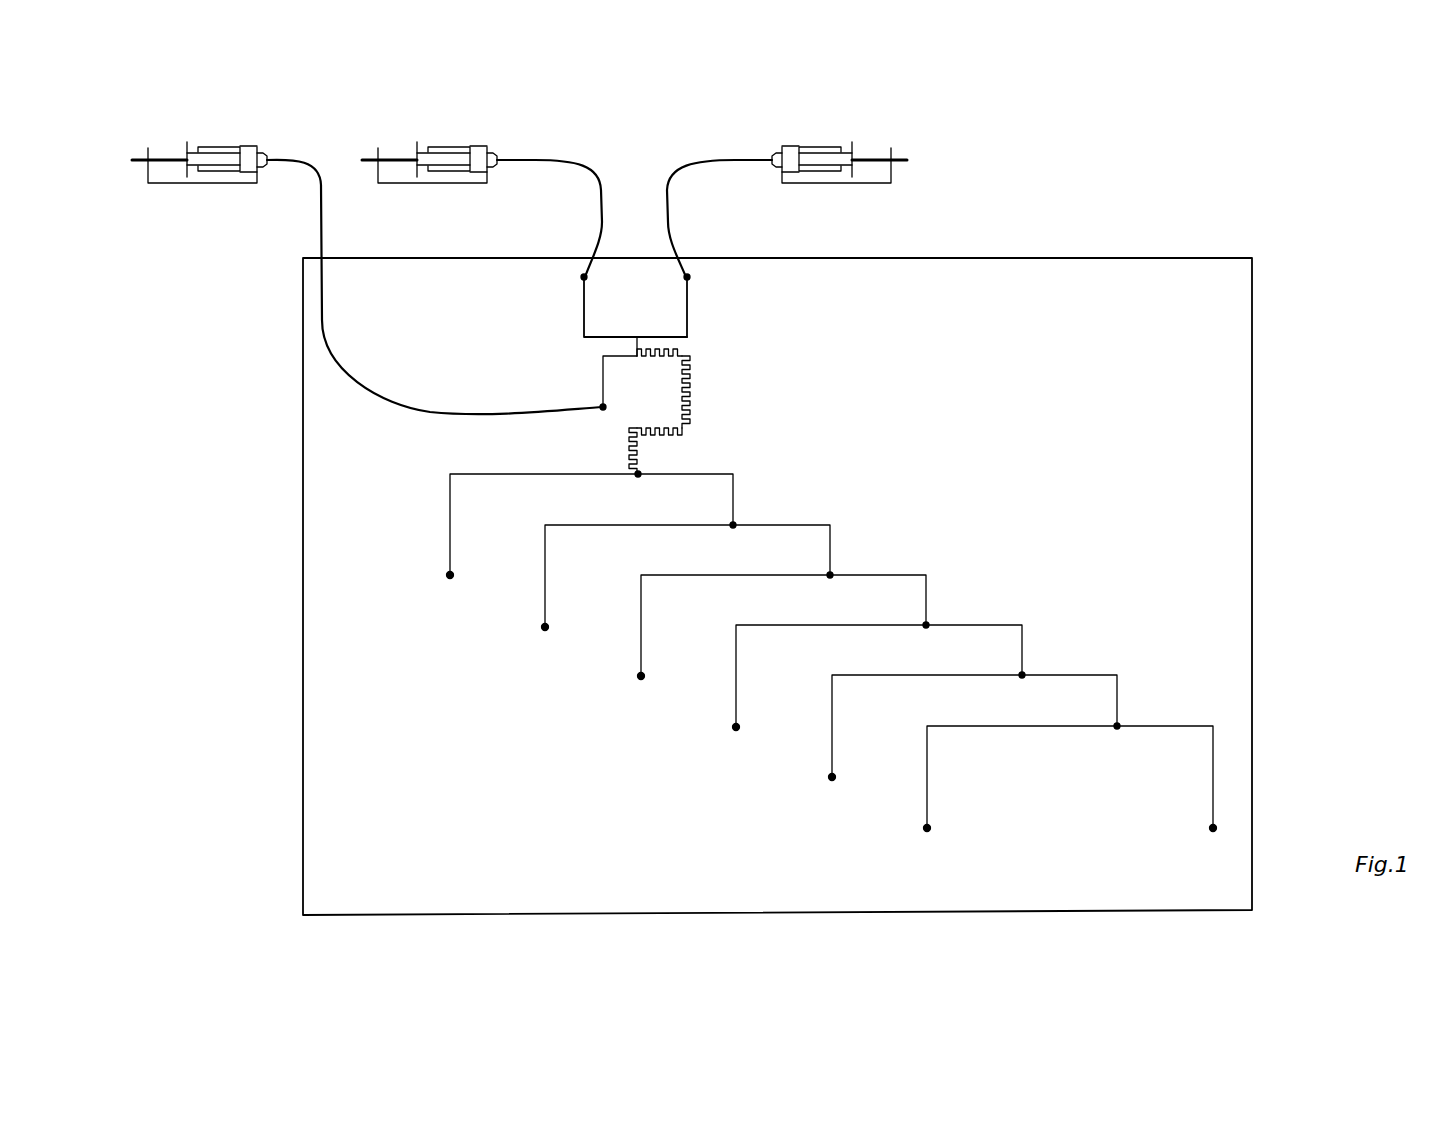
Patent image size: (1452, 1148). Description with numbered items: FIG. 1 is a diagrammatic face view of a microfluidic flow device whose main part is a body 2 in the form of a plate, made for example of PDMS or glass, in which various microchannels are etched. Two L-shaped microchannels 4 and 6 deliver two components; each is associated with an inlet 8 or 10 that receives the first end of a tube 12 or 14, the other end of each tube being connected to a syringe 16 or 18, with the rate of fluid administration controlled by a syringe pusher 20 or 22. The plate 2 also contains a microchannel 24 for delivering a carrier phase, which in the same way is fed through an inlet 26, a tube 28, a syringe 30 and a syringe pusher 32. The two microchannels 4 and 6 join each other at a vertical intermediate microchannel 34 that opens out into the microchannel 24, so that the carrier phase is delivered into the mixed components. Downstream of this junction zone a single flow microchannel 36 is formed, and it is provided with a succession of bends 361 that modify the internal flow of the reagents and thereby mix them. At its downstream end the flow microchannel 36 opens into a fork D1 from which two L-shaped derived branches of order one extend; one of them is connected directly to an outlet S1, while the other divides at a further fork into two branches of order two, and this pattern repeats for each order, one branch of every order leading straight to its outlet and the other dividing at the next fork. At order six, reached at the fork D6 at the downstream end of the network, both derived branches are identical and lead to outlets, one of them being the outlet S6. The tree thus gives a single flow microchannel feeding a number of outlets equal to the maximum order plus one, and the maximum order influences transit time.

The body 2 is at (1190, 230).
The L-shaped microchannel 4 is at (575, 310).
The L-shaped microchannel 6 is at (705, 322).
The inlet 8 is at (584, 277).
The inlet 10 is at (687, 277).
The tube 12 is at (568, 165).
The tube 14 is at (697, 158).
The syringe 16 is at (448, 160).
The syringe 18 is at (844, 149).
The syringe pusher 20 is at (397, 183).
The syringe pusher 22 is at (838, 183).
The microchannel 24 is at (577, 375).
The inlet 26 is at (603, 410).
The tube 28 is at (430, 412).
The syringe 30 is at (216, 174).
The syringe pusher 32 is at (195, 185).
The intermediate microchannel 34 is at (634, 350).
The flow microchannel 36 is at (705, 390).
The bends 361 is at (683, 431).
The fork D1 is at (638, 474).
The fork D6 is at (1117, 726).
The outlet S1 is at (450, 578).
The outlet S6 is at (927, 831).